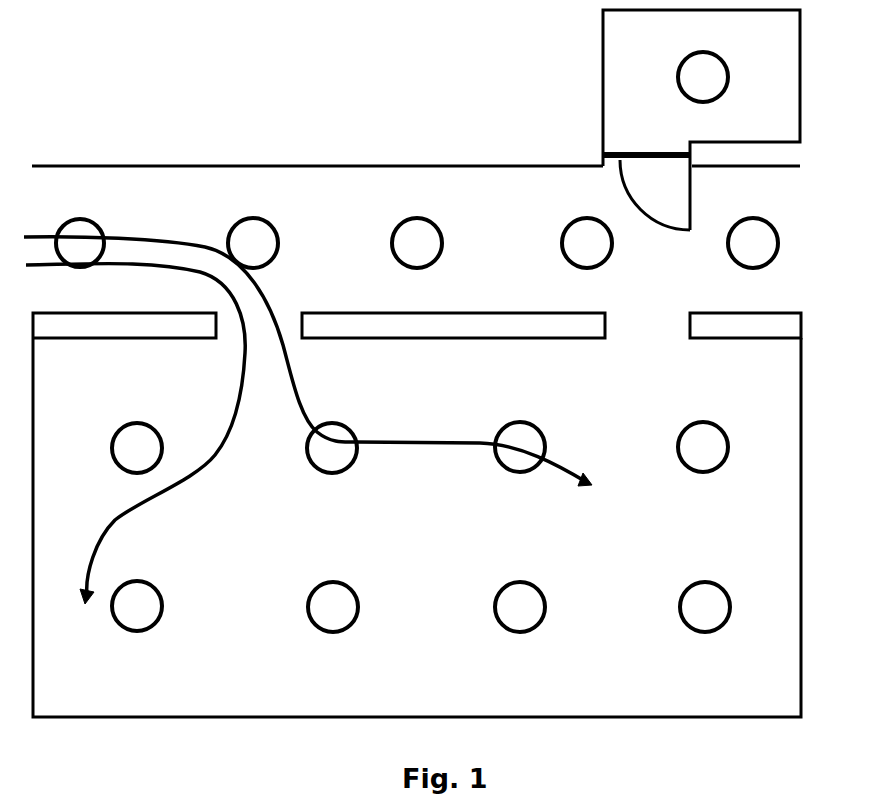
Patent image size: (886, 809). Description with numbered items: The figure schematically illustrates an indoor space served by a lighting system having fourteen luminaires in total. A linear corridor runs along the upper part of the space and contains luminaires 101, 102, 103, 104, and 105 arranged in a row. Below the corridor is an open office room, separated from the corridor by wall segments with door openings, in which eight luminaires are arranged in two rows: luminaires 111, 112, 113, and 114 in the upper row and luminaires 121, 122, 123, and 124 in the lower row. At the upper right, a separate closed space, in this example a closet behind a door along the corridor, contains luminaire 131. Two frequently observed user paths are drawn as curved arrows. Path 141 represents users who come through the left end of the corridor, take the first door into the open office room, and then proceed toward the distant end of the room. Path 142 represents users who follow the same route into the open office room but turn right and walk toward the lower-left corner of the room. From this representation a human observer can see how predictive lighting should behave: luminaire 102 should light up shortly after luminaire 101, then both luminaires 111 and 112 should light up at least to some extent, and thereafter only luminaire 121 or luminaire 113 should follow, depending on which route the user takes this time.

The luminaire 101 is at (98, 226).
The luminaire 102 is at (271, 226).
The luminaire 103 is at (435, 226).
The luminaire 104 is at (604, 261).
The luminaire 105 is at (771, 226).
The luminaire 111 is at (155, 431).
The luminaire 112 is at (350, 431).
The luminaire 113 is at (538, 430).
The luminaire 114 is at (721, 430).
The luminaire 121 is at (155, 589).
The luminaire 122 is at (351, 590).
The luminaire 123 is at (538, 590).
The luminaire 124 is at (723, 590).
The luminaire 131 is at (721, 60).
The path 141 is at (272, 323).
The path 142 is at (206, 456).